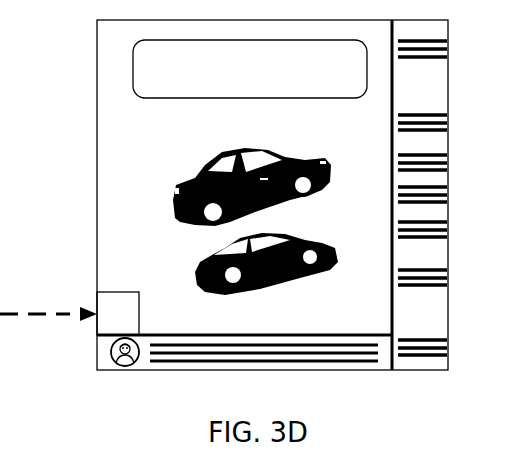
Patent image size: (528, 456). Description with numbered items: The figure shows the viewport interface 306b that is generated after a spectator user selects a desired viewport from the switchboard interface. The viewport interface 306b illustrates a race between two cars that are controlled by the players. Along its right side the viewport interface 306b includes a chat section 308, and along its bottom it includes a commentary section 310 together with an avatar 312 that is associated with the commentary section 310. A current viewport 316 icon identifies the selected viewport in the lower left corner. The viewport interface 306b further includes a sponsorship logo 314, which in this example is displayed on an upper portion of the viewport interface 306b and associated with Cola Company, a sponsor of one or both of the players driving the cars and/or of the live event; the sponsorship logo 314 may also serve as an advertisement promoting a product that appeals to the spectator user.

The viewport interface 306b is at (98, 118).
The sponsorship logo 314 is at (131, 68).
The chat section 308 is at (432, 115).
The current viewport icon 316 is at (108, 303).
The commentary section 310 is at (98, 358).
The avatar 312 is at (122, 367).